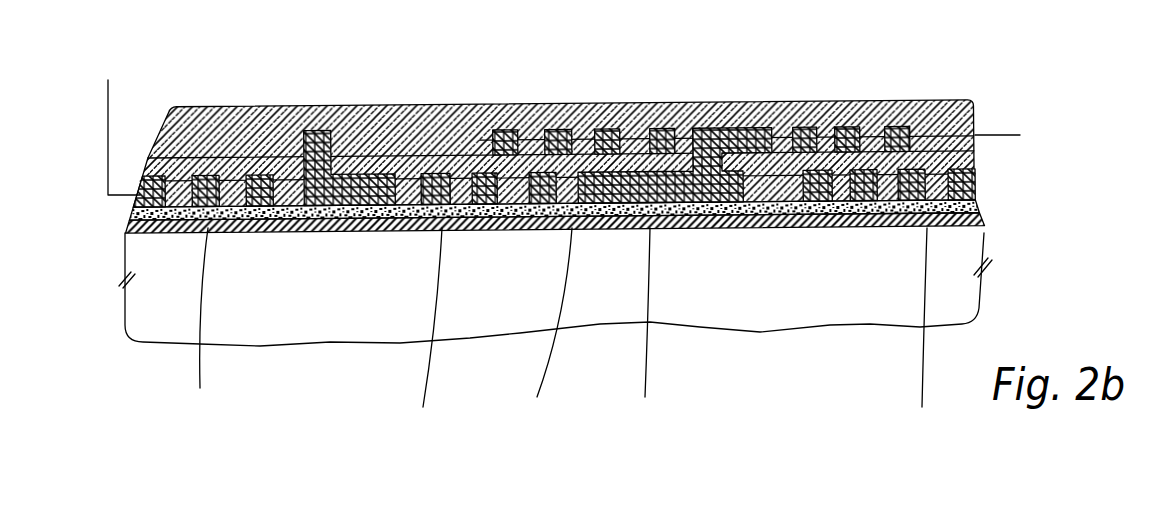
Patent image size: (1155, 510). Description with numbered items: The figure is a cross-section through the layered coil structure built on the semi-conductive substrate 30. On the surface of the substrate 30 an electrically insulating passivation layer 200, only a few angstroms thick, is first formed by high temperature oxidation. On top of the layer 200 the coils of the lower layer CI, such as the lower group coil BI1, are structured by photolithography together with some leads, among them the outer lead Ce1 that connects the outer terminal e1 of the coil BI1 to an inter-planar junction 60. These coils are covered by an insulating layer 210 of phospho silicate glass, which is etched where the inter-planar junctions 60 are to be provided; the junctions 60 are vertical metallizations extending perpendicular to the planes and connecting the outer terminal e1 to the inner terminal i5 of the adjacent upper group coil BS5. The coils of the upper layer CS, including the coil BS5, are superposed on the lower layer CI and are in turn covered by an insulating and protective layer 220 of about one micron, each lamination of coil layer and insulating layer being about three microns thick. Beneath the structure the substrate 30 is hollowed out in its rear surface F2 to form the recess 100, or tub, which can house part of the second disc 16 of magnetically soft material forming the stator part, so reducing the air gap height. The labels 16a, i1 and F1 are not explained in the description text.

The recess 100 is at (857, 407).
The inter-planar junction 60 is at (358, 108).
The insulating and protective layer 220 is at (930, 120).
The insulating layer 210 is at (975, 158).
The electrically insulating layer 200 is at (985, 207).
The second disc 16 is at (700, 77).
The lower interconnect lines 16a is at (554, 103).
The upper group coil BS5 is at (652, 131).
The first interconnect via i1 is at (319, 125).
The inner terminal i5 is at (731, 122).
The lower layer CI is at (118, 123).
The upper layer CS is at (1007, 134).
The first face F1 is at (202, 324).
The rear surface F2 is at (570, 55).
The lower group coil BI1 is at (424, 335).
The outer terminal e1 is at (551, 428).
The outer lead Ce1 is at (647, 331).
The semi-conductive substrate 30 is at (921, 331).